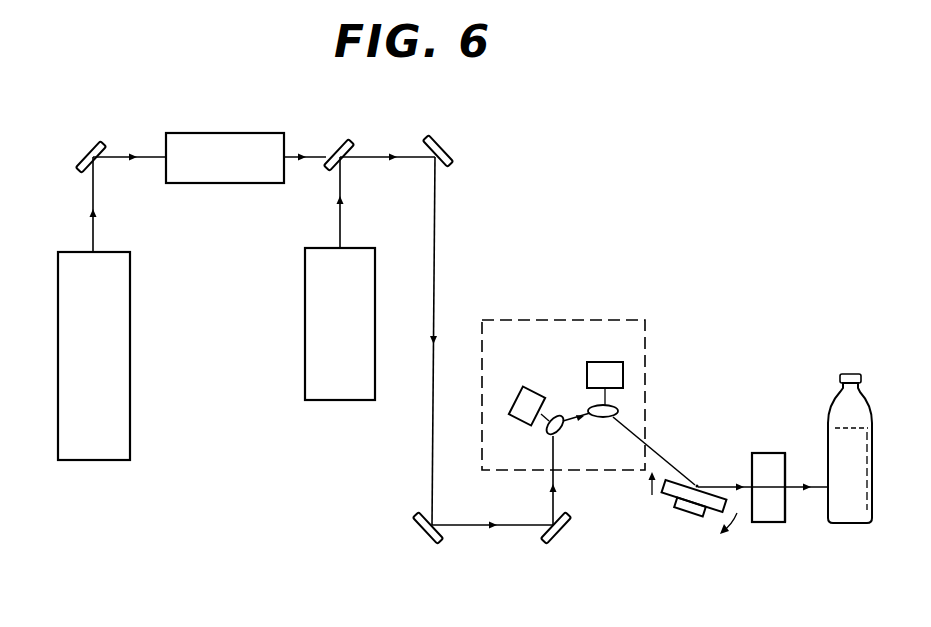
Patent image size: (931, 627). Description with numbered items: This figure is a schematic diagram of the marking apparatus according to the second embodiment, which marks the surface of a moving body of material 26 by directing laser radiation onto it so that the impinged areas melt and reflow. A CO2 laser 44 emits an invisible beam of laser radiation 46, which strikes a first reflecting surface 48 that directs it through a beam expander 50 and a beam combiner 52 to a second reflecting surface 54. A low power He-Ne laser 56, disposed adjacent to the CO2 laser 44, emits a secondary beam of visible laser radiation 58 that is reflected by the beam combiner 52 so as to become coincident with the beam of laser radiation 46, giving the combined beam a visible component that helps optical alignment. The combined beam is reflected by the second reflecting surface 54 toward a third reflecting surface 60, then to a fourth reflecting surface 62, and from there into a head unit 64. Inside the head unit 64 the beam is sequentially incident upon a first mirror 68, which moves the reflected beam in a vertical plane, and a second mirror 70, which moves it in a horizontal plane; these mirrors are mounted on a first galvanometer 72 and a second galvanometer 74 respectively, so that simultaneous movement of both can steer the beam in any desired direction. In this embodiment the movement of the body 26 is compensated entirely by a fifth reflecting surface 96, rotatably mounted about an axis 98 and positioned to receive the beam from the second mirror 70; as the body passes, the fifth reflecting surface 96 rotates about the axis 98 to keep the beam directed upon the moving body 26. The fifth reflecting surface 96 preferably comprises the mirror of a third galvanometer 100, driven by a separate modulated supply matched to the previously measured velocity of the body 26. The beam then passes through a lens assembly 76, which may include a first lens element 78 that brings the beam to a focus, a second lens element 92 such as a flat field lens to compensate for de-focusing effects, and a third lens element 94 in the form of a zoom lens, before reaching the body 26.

The moving body 26 is at (848, 523).
The CO2 laser 44 is at (122, 367).
The beam of laser radiation 46 is at (93, 233).
The first reflecting surface 48 is at (87, 153).
The beam expander 50 is at (220, 133).
The beam combiner 52 is at (336, 146).
The second reflecting surface 54 is at (445, 141).
The He-Ne laser 56 is at (307, 335).
The secondary beam of visible laser radiation 58 is at (342, 218).
The third reflecting surface 60 is at (425, 533).
The fourth reflecting surface 62 is at (555, 537).
The head unit 64 is at (618, 472).
The first mirror 68 is at (548, 432).
The second mirror 70 is at (600, 418).
The first galvanometer 72 is at (518, 393).
The second galvanometer 74 is at (593, 362).
The lens assembly 76 is at (766, 530).
The first lens element 78 is at (752, 455).
The second lens element 92 is at (763, 453).
The third lens element 94 is at (802, 440).
The fifth reflecting surface 96 is at (668, 494).
The axis 98 is at (697, 499).
The third galvanometer 100 is at (702, 484).